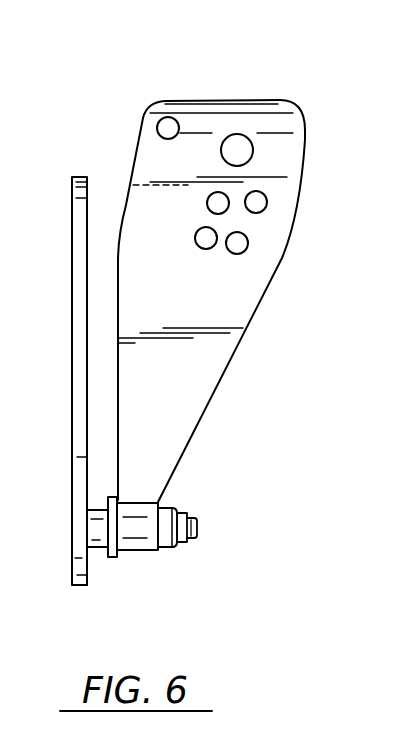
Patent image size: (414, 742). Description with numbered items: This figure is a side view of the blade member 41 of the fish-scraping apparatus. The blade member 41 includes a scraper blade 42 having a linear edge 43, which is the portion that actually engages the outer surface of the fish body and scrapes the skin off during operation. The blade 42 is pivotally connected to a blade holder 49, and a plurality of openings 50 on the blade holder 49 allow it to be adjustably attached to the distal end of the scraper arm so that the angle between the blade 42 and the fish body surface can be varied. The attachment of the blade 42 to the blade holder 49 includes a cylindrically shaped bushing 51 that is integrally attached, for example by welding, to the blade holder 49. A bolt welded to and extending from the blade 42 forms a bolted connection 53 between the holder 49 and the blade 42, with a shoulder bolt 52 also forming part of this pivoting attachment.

The blade member 41 is at (242, 70).
The scraper blade 42 is at (72, 215).
The linear edge 43 is at (75, 586).
The blade holder 49 is at (263, 262).
The openings 50 is at (242, 147).
The bushing 51 is at (143, 551).
The shoulder bolt 52 is at (102, 530).
The bolted connection 53 is at (187, 512).